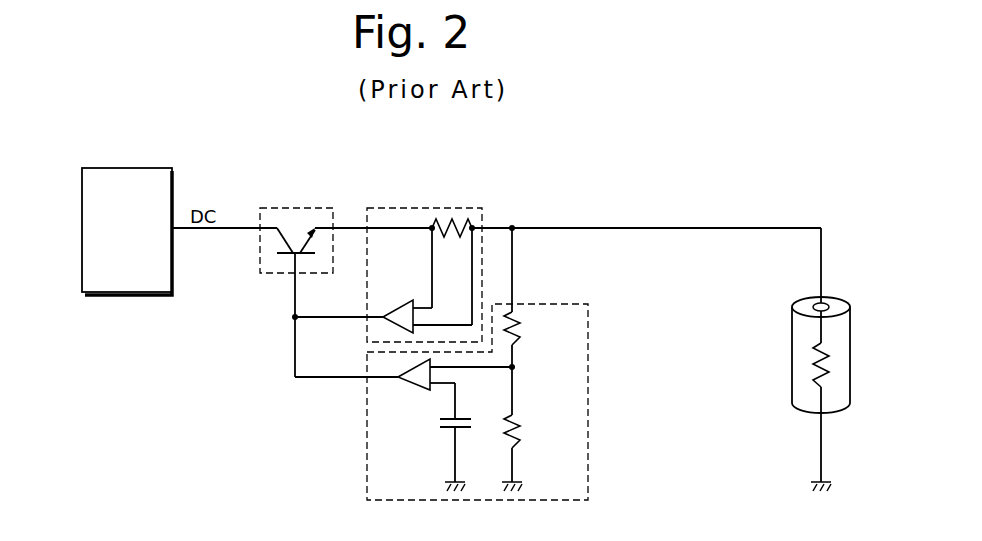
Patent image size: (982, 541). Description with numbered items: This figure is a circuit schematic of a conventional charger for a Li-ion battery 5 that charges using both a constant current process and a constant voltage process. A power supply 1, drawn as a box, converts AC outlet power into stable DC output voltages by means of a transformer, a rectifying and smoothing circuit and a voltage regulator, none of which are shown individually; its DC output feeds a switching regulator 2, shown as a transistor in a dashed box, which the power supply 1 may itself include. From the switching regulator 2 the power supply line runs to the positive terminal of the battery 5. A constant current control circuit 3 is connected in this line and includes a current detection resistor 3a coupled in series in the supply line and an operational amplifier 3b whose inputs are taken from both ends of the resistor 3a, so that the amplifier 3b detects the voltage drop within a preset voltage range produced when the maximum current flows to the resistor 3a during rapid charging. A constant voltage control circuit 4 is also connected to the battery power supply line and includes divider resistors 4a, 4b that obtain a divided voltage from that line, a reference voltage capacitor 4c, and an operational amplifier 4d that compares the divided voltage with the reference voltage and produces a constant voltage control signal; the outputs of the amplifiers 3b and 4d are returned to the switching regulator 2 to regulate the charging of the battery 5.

The power supply 1 is at (130, 168).
The switching regulator 2 is at (290, 208).
The constant current control circuit 3 is at (413, 208).
The current detection resistor 3a is at (452, 240).
The operational amplifier 3b is at (403, 303).
The constant voltage control circuit 4 is at (590, 432).
The divider resistor 4a is at (525, 321).
The divider resistor 4b is at (525, 428).
The reference voltage capacitor 4c is at (445, 430).
The operational amplifier 4d is at (415, 386).
The Li-ion battery 5 is at (792, 340).